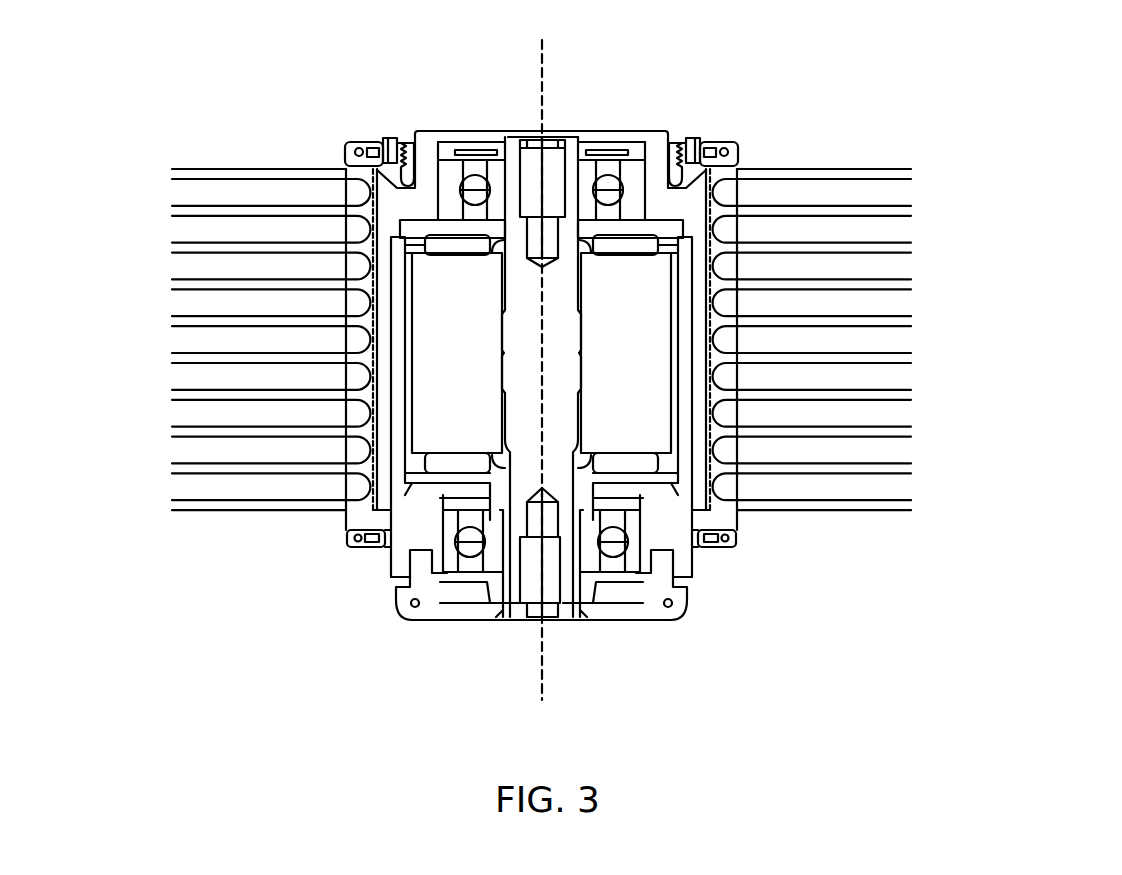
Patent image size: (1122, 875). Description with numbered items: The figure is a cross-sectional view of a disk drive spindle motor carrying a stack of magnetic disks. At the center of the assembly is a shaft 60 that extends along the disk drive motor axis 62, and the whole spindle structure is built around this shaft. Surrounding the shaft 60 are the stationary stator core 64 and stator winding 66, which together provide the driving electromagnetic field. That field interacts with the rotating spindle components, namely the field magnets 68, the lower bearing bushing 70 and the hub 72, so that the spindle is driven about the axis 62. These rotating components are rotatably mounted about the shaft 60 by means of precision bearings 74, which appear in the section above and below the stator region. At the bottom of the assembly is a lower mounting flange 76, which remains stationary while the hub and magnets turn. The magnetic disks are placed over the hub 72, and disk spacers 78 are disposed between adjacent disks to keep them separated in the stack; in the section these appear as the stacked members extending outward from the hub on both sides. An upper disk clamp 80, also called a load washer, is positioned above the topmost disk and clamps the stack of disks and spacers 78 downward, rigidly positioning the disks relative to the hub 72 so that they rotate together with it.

The shaft 60 is at (508, 128).
The disk drive motor axis 62 is at (546, 51).
The stator core 64 is at (645, 318).
The stator winding 66 is at (647, 243).
The field magnets 68 is at (685, 373).
The lower bearing bushing 70 is at (688, 558).
The hub 72 is at (693, 205).
The precision bearings 74 is at (633, 557).
The lower mounting flange 76 is at (680, 600).
The disk spacers 78 is at (340, 188).
The upper disk clamp 80 is at (347, 152).